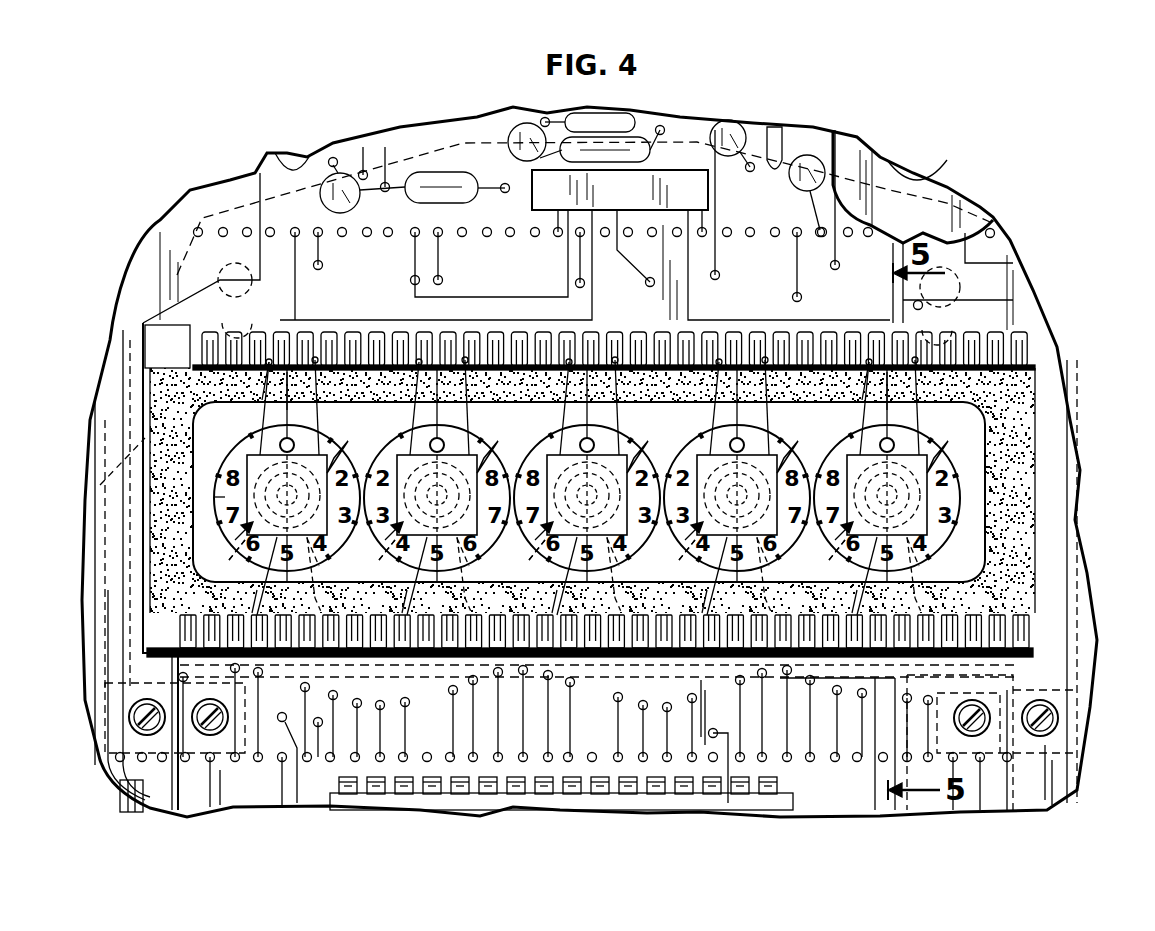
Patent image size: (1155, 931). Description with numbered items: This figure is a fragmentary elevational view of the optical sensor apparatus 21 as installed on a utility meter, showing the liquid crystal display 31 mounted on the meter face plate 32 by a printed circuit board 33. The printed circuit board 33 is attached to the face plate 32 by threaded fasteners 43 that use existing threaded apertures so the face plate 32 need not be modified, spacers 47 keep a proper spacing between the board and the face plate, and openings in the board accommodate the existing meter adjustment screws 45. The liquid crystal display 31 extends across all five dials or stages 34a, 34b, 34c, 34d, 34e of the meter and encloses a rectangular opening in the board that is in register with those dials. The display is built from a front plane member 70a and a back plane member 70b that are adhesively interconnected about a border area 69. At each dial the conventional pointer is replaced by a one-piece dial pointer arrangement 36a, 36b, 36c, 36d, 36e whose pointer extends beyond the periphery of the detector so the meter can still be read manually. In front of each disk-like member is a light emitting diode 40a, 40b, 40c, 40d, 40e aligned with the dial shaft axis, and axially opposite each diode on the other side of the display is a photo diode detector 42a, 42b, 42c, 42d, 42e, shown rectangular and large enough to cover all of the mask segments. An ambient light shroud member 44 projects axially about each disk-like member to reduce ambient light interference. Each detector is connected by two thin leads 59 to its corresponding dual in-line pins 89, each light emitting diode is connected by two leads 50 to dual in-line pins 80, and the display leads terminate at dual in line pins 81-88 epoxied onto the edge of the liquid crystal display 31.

The optical sensor apparatus 21 is at (1057, 347).
The liquid crystal display 31 is at (1042, 397).
The utility meter face plate 32 is at (995, 248).
The printed circuit board 33 is at (1022, 282).
The meter dial 34a is at (233, 458).
The meter dial 34b is at (383, 458).
The meter dial 34c is at (533, 458).
The meter dial 34d is at (683, 458).
The meter dial 34e is at (838, 458).
The dial pointer arrangement 36a is at (222, 559).
The dial pointer arrangement 36b is at (372, 559).
The dial pointer arrangement 36c is at (522, 559).
The dial pointer arrangement 36d is at (676, 559).
The dial pointer arrangement 36e is at (826, 559).
The light emitting diode 40a is at (314, 602).
The light emitting diode 40b is at (467, 602).
The light emitting diode 40c is at (628, 602).
The light emitting diode 40d is at (775, 602).
The light emitting diode 40e is at (932, 602).
The photo diode detector 42a is at (241, 601).
The photo diode detector 42b is at (395, 601).
The photo diode detector 42c is at (558, 601).
The photo diode detector 42d is at (701, 601).
The photo diode detector 42e is at (863, 601).
The threaded fastener 43 is at (130, 718).
The ambient light shroud member 44 is at (214, 497).
The meter adjustment screw 45 is at (213, 735).
The spacer 47 is at (112, 690).
The lead 50 is at (292, 408).
The lead 59 is at (275, 385).
The border area 69 is at (1037, 540).
The front plane member 70a is at (1027, 630).
The back plane member 70b is at (1027, 428).
The dual in-line pins 80 is at (313, 352).
The dual in line pins 81-88 is at (667, 660).
The dual in line pins 89 is at (285, 340).